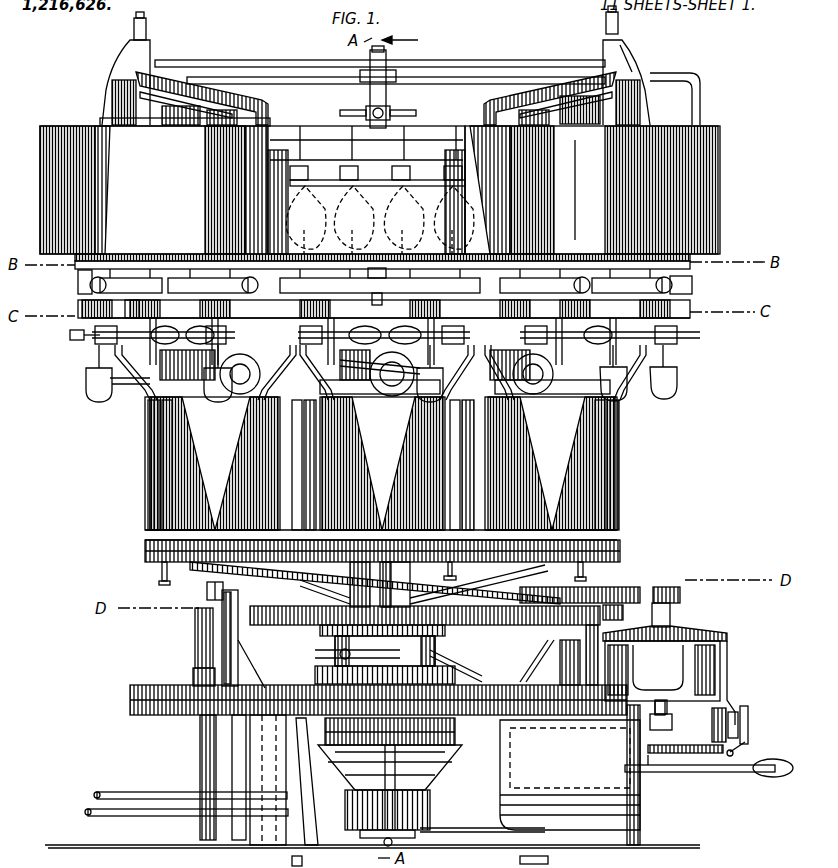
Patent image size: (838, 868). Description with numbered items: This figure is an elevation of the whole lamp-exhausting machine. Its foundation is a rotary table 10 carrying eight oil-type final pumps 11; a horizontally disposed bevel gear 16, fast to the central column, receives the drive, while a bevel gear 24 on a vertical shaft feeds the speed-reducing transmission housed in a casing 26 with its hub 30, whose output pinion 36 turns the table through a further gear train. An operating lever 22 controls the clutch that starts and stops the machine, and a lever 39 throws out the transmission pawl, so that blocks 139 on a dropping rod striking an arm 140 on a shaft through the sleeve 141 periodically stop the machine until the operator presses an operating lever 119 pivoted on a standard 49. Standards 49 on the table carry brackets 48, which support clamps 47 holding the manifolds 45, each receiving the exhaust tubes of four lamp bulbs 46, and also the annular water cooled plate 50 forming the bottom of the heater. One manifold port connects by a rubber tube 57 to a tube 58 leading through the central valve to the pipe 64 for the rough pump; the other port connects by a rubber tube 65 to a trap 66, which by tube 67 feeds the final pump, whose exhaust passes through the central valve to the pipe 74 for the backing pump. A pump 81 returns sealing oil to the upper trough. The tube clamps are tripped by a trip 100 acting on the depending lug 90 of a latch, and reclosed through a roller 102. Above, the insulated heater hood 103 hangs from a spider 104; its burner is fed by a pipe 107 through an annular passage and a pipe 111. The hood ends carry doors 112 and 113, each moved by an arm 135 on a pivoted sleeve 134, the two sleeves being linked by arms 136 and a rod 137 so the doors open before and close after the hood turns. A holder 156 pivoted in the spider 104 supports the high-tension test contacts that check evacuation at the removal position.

The rotary table 10 is at (144, 551).
The final pumps 11 is at (635, 445).
The bevel gear 16 is at (444, 780).
The operating lever 22 is at (703, 773).
The bevel gear 24 is at (653, 773).
The casing 26 is at (722, 668).
The hub 30 is at (672, 726).
The pinion 36 is at (681, 594).
The lever 39 is at (540, 760).
The manifolds 45 is at (143, 263).
The lamp bulbs 46 is at (345, 233).
The clamps 47 is at (376, 268).
The brackets 48 is at (690, 296).
The standards 49 is at (148, 400).
The annular water cooled plate 50 is at (688, 262).
The rubber tube 57 is at (326, 345).
The tube 58 is at (360, 395).
The pipe 64 is at (88, 812).
The rubber tube 65 is at (428, 318).
The trap 66 is at (88, 392).
The tube 67 is at (372, 380).
The pipe 74 is at (96, 794).
The pump 81 is at (746, 718).
The depending lug 90 is at (61, 332).
The trip 100 is at (292, 862).
The roller 102 is at (92, 340).
The hood 103 is at (730, 180).
The spider 104 is at (165, 127).
The pipe 107 is at (458, 832).
The pipe 111 is at (701, 98).
The door 112 is at (282, 125).
The door 113 is at (476, 125).
The operating lever 119 is at (486, 396).
The pivoted sleeve 134 is at (626, 46).
The arm 135 is at (588, 84).
The arm 136 is at (147, 57).
The rod 137 is at (268, 60).
The blocks 139 is at (160, 583).
The arm 140 is at (207, 588).
The sleeve 141 is at (238, 650).
The holder 156 is at (386, 112).